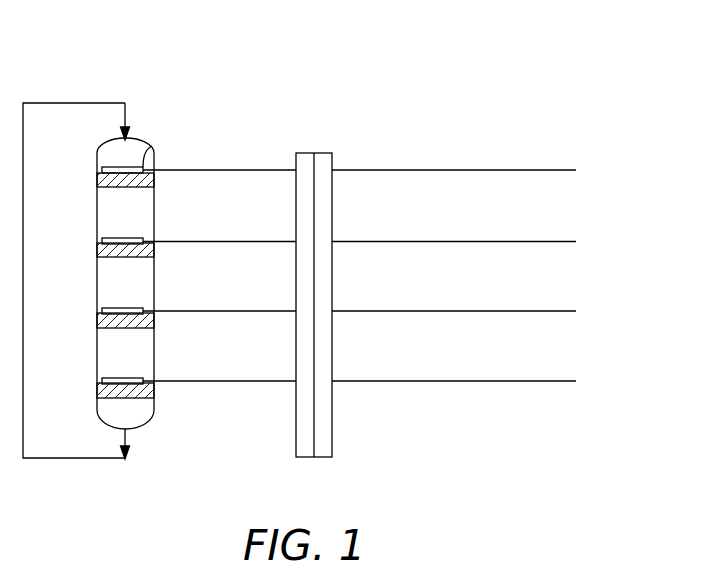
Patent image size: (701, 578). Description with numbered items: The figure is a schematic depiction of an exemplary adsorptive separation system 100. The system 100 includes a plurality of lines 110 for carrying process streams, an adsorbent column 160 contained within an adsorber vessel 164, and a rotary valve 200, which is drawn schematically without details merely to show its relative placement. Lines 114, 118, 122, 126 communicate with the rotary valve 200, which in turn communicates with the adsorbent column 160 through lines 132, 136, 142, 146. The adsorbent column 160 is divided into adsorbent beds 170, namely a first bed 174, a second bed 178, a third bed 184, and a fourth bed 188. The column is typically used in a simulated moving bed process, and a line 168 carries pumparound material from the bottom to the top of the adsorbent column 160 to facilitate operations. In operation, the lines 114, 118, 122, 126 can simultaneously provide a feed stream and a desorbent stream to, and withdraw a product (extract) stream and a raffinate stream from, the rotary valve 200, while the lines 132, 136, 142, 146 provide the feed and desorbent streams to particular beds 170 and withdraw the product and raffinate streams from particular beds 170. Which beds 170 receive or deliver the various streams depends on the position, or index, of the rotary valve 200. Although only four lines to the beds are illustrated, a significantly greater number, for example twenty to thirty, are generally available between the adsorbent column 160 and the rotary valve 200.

The adsorptive separation system 100 is at (510, 56).
The lines 110 is at (583, 111).
The line 114 is at (454, 169).
The line 118 is at (454, 240).
The line 122 is at (454, 310).
The line 126 is at (454, 380).
The line 132 is at (240, 169).
The line 136 is at (240, 240).
The line 142 is at (240, 310).
The line 146 is at (240, 380).
The adsorbent column 160 is at (166, 110).
The adsorber vessel 164 is at (145, 421).
The line 168 is at (88, 103).
The adsorbent beds 170 is at (108, 152).
The first bed 174 is at (153, 145).
The second bed 178 is at (125, 236).
The third bed 184 is at (125, 306).
The fourth bed 188 is at (125, 376).
The rotary valve 200 is at (338, 125).